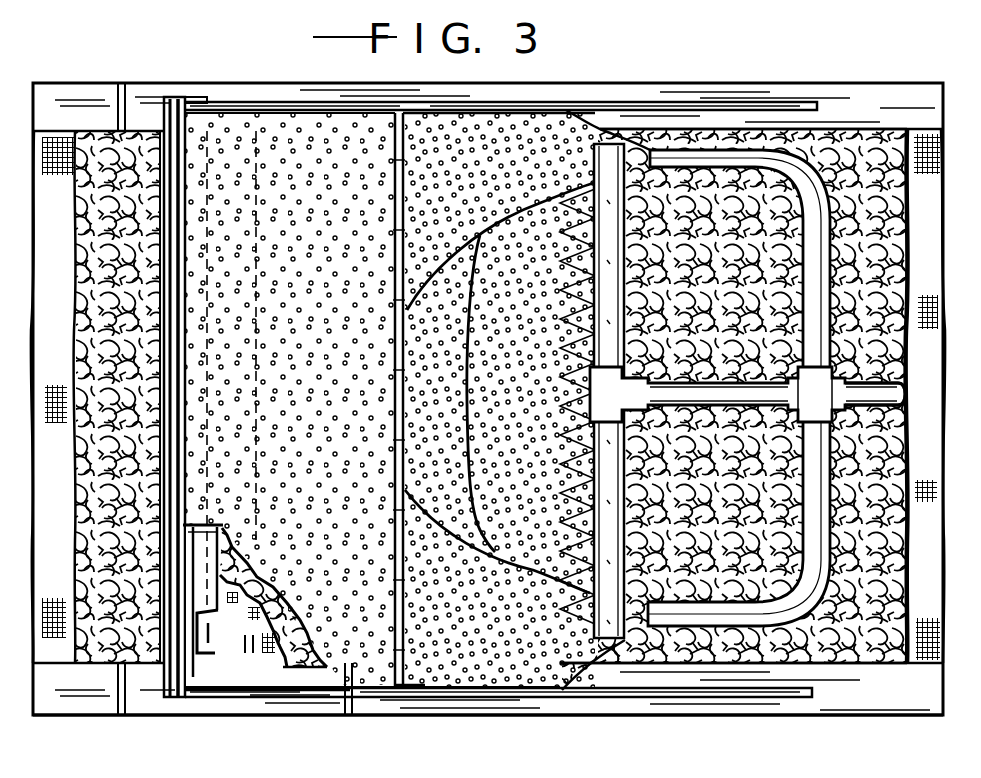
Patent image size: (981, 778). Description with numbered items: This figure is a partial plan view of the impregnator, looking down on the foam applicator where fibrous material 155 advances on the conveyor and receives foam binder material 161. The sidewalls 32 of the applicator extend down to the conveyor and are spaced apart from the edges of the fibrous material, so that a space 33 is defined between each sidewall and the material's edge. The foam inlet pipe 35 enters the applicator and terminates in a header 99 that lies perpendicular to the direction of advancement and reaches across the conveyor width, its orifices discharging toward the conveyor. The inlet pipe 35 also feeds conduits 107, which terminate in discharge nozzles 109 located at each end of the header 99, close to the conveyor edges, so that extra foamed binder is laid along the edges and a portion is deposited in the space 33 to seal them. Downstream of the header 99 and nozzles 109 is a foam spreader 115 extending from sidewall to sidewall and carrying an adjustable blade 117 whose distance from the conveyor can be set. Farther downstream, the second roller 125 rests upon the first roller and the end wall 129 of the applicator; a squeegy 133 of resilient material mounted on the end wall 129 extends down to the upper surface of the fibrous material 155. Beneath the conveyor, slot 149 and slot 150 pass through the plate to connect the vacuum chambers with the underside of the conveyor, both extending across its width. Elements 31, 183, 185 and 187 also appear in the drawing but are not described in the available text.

The frame bar 31 is at (606, 104).
The sidewalls 32 is at (305, 700).
The space 33 is at (692, 125).
The foam inlet pipe 35 is at (872, 410).
The header 99 is at (627, 478).
The conduits 107 is at (802, 228).
The discharge nozzles 109 is at (648, 172).
The foam spreader 115 is at (395, 210).
The adjustable blade 117 is at (395, 320).
The second roller 125 is at (203, 677).
The end wall 129 is at (188, 133).
The squeegy 133 is at (163, 455).
The slot 149 is at (249, 653).
The slot 150 is at (215, 653).
The fibrous material 155 is at (327, 667).
The foam binder material 161 is at (330, 425).
The layer 183 is at (591, 772).
The layer 185 is at (506, 772).
The layer 187 is at (418, 772).